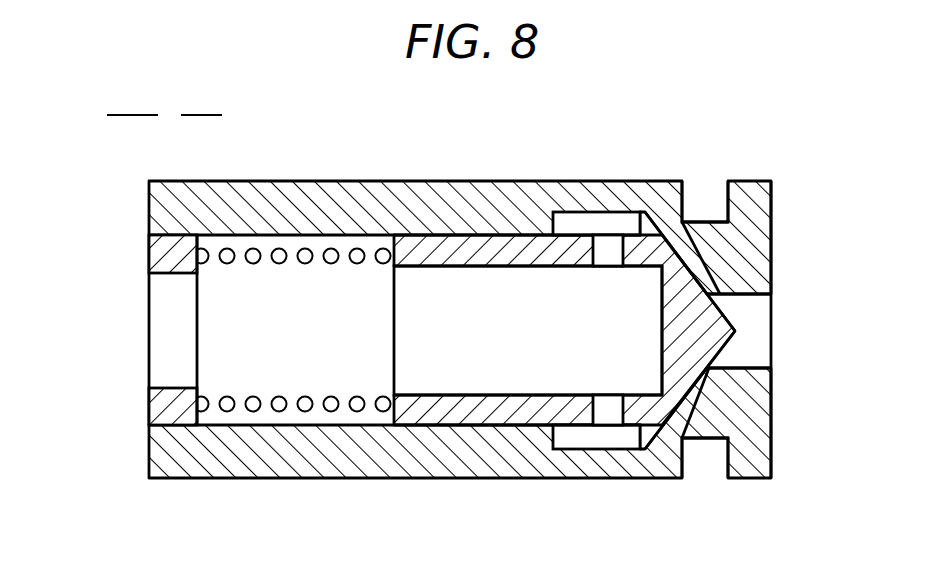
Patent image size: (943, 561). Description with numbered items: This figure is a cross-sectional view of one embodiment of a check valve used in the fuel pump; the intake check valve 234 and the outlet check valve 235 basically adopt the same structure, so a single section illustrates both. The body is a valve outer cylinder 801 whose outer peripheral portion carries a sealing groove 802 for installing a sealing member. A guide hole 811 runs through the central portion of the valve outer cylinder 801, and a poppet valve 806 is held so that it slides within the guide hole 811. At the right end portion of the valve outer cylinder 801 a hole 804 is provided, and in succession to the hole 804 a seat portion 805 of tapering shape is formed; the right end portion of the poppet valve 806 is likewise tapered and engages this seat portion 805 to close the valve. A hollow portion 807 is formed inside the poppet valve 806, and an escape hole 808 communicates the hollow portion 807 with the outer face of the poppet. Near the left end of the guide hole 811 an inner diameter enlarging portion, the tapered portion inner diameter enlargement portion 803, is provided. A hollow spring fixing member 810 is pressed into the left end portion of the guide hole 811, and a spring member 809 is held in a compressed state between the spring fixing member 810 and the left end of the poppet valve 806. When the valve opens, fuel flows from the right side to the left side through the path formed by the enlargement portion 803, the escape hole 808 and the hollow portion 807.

The intake check valve 234 is at (132, 102).
The outlet check valve 235 is at (203, 102).
The valve outer cylinder 801 is at (404, 182).
The sealing groove 802 is at (692, 193).
The tapered portion inner diameter enlargement portion 803 is at (582, 218).
The hole 804 is at (771, 295).
The seat portion 805 is at (698, 285).
The poppet valve 806 is at (455, 422).
The hollow portion 807 is at (495, 347).
The escape hole 808 is at (617, 420).
The spring member 809 is at (305, 412).
The spring fixing member 810 is at (149, 398).
The guide hole 811 is at (316, 242).